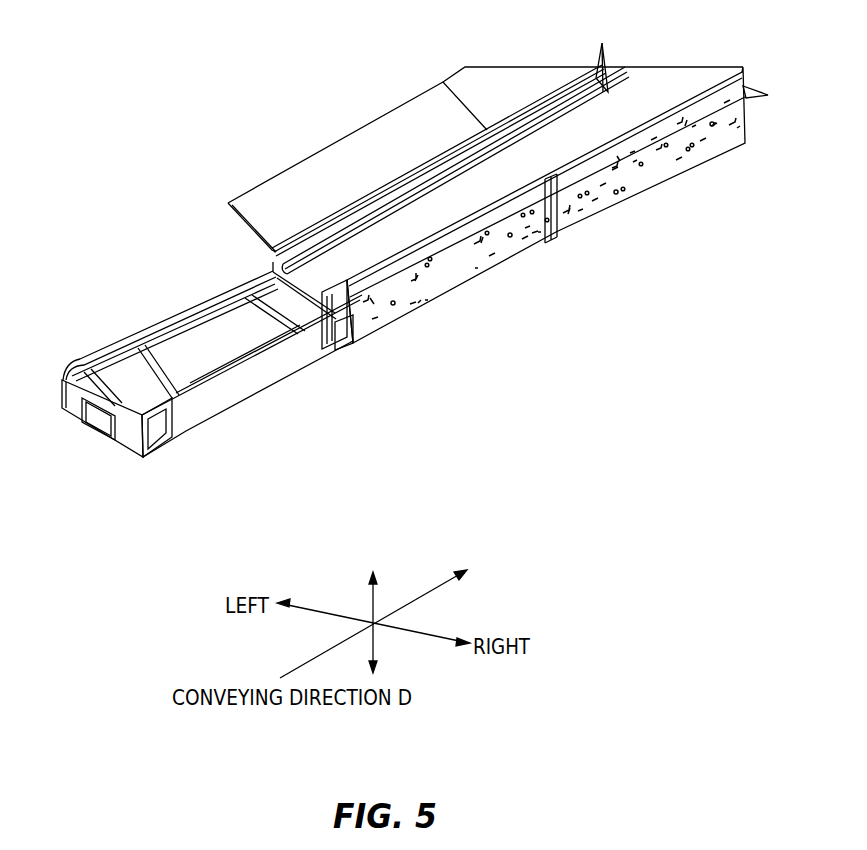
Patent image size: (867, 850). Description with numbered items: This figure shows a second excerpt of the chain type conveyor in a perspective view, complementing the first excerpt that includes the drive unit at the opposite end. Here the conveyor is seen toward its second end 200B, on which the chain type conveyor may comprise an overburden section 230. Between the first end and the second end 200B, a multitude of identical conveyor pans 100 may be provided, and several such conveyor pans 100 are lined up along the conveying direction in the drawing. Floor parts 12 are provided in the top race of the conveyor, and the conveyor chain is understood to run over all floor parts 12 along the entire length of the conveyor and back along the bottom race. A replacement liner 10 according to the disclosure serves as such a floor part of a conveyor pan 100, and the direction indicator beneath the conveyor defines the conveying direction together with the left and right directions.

The replacement liner 10 is at (365, 147).
The floor part 12 is at (437, 212).
The conveyor pan 100 is at (208, 450).
The second end 200B is at (104, 352).
The overburden section 230 is at (253, 343).